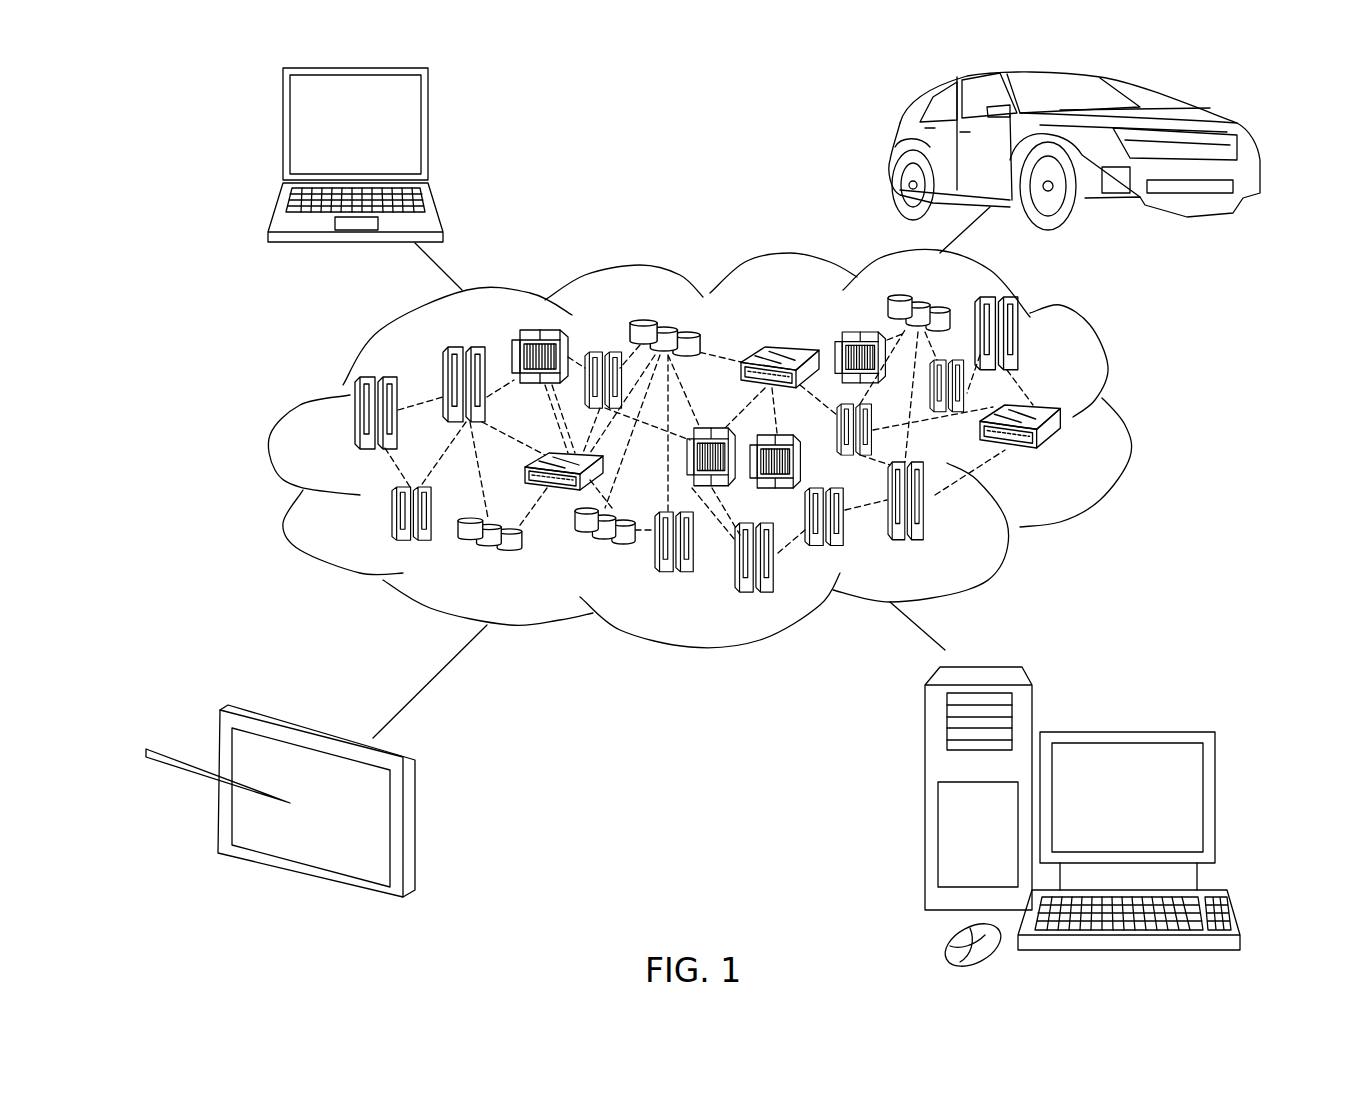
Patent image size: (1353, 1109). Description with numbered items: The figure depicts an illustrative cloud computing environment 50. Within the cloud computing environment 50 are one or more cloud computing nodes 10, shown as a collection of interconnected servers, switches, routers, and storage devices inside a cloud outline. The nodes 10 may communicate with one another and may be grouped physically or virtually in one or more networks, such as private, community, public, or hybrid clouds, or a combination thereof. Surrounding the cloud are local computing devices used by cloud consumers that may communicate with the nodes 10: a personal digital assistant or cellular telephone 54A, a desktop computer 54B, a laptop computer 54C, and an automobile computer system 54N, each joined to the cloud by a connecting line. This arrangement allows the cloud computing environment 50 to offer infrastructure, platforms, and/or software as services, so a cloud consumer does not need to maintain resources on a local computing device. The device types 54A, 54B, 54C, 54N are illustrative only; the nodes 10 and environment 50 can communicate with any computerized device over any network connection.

The cloud computing nodes 10 is at (1072, 460).
The cloud computing environment 50 is at (1125, 423).
The personal digital assistant (PDA) or cellular telephone 54A is at (417, 827).
The desktop computer 54B is at (1125, 730).
The laptop computer 54C is at (428, 132).
The automobile computer system 54N is at (890, 148).